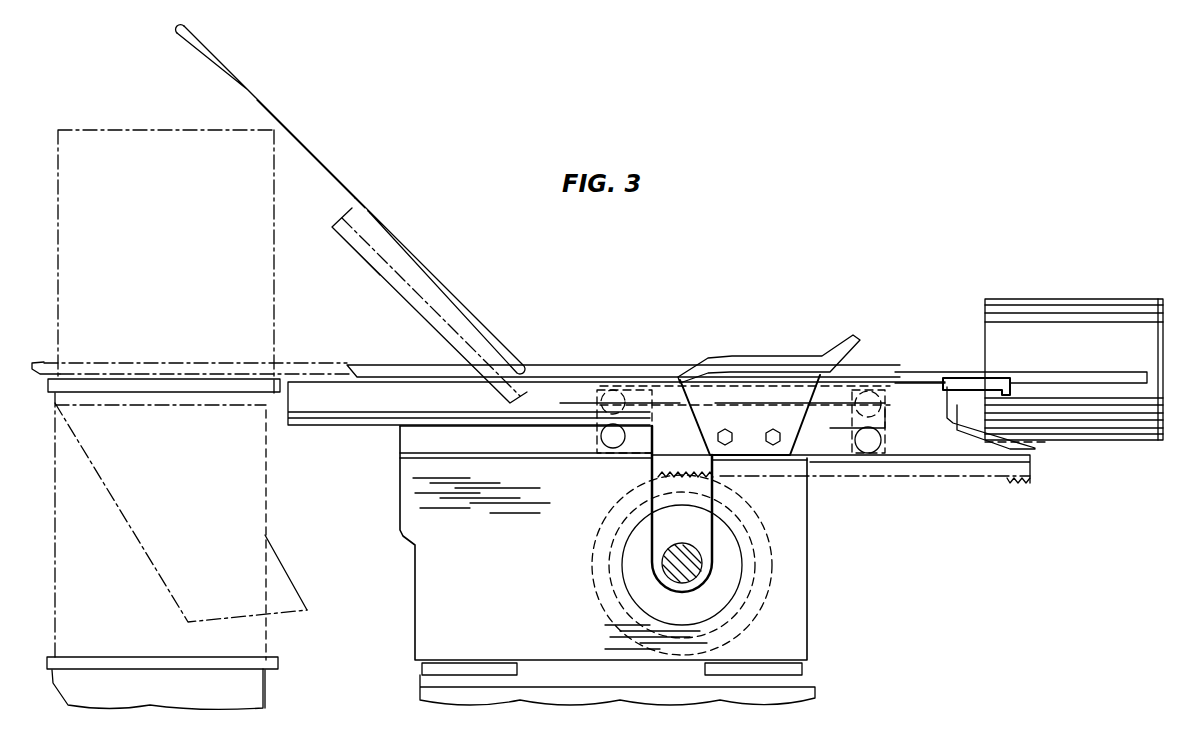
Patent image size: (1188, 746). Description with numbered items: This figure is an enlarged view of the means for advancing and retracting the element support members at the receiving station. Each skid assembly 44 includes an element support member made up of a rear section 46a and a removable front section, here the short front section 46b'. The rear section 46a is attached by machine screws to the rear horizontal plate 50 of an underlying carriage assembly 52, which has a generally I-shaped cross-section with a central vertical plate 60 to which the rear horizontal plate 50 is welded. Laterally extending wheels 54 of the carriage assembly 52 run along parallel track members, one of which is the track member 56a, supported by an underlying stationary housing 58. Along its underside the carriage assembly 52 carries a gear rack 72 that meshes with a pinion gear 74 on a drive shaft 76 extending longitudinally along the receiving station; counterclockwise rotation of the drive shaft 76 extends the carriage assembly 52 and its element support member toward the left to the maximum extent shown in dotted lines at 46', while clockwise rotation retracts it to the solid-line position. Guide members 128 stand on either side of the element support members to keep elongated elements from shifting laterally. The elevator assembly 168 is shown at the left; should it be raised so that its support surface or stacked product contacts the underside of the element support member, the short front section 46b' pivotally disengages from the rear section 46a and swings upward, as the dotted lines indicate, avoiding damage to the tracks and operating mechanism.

The skid assembly 44 is at (628, 323).
The extended position of element support member 46' is at (176, 348).
The rear section 46a is at (1093, 376).
The short front section 46b' is at (538, 215).
The rear horizontal plate 50 is at (992, 381).
The carriage assembly 52 is at (951, 487).
The wheels 54 is at (600, 440).
The track member 56a is at (337, 418).
The stationary housing 58 is at (796, 603).
The central vertical plate 60 is at (1032, 448).
The gear rack 72 is at (992, 484).
The pinion gear 74 is at (743, 616).
The drive shaft 76 is at (672, 575).
The guide member 128 is at (838, 352).
The elevator assembly 168 is at (258, 693).